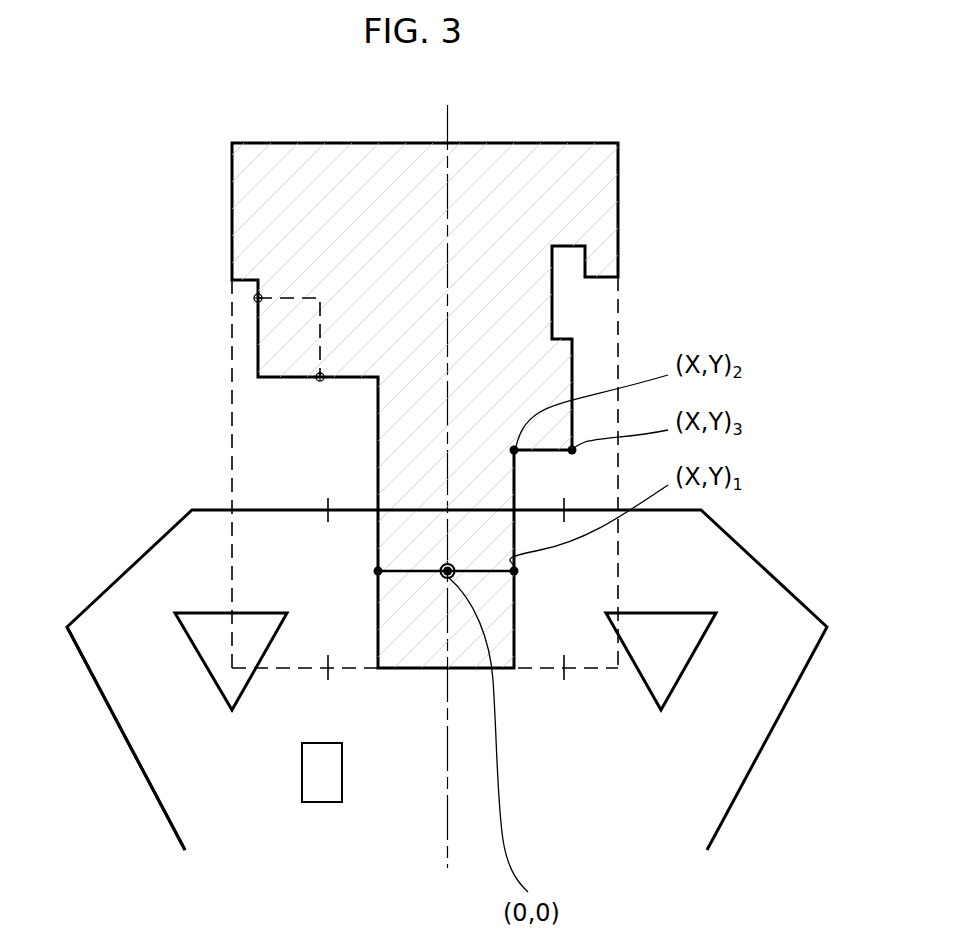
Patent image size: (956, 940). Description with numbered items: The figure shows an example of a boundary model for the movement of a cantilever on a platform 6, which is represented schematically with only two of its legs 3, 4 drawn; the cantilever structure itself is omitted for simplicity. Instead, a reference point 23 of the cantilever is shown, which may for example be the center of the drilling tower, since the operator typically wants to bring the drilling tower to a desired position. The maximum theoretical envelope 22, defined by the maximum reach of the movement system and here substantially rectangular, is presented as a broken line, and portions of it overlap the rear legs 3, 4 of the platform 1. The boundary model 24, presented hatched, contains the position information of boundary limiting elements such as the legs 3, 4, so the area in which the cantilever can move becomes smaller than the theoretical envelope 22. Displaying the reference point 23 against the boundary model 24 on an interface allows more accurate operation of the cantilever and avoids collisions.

The platform 1 is at (118, 810).
The leg 3 is at (192, 623).
The leg 4 is at (700, 623).
The platform 6 is at (173, 743).
The maximum theoretical envelope 22 is at (231, 403).
The reference point 23 is at (447, 577).
The boundary model 24 is at (583, 180).